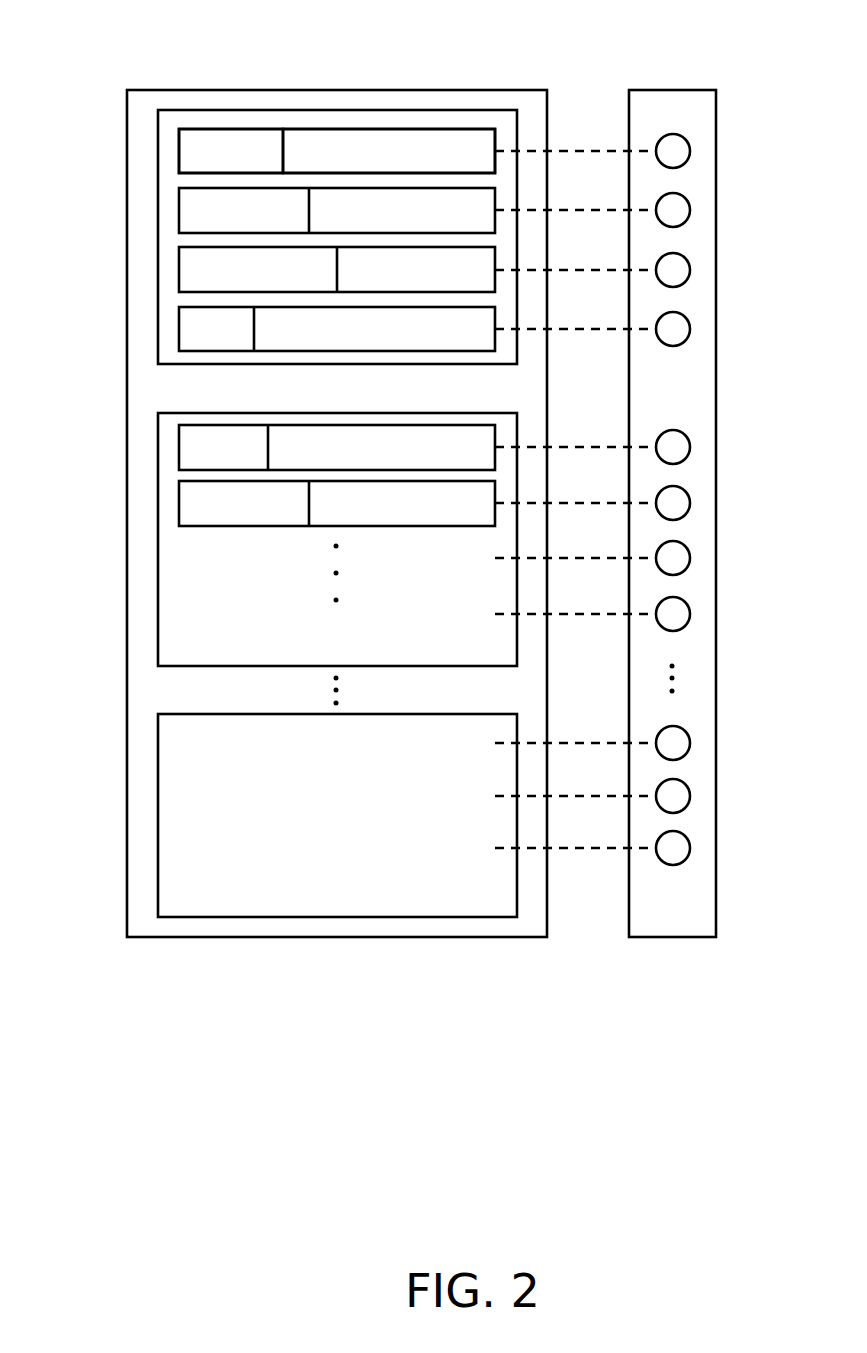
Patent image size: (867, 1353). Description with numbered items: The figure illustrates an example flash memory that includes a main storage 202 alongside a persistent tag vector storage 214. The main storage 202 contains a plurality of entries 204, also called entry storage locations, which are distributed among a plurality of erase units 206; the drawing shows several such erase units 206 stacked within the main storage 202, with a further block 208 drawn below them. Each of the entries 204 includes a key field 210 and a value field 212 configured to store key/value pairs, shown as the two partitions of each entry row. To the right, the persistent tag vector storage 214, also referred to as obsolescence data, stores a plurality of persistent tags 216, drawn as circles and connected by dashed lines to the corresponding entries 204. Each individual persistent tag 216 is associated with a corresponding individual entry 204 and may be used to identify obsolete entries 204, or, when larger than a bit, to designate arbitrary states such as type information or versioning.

The main storage 202 is at (155, 90).
The entries 204 is at (179, 144).
The erase units 206 is at (158, 227).
The additional group block 208 is at (158, 762).
The key field 210 is at (247, 142).
The value field 212 is at (354, 142).
The persistent tag vector storage 214 is at (708, 103).
The persistent tags 216 is at (676, 156).